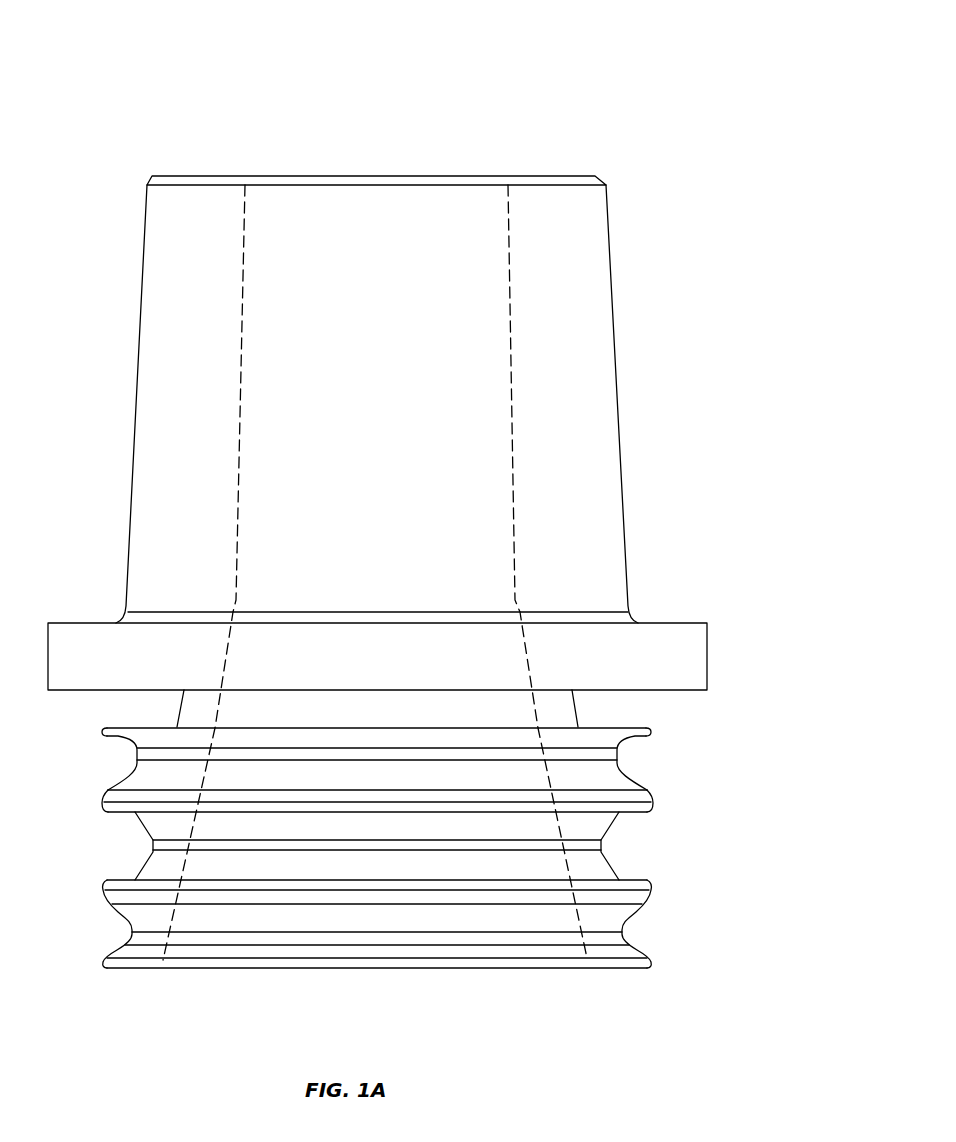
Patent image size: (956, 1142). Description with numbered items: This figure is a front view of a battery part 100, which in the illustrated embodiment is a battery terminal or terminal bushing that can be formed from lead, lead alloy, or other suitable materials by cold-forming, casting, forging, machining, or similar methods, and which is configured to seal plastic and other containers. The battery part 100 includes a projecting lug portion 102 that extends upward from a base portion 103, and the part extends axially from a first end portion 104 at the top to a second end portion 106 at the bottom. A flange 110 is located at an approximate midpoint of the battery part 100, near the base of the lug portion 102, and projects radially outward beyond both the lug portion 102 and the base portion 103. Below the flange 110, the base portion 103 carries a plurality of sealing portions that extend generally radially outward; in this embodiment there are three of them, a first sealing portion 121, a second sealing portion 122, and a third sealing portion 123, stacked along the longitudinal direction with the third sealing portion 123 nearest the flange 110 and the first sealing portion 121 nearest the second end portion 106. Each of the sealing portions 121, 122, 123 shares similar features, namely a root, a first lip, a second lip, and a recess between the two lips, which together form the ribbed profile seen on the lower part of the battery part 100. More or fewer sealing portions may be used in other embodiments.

The battery part 100 is at (672, 111).
The lug portion 102 is at (592, 250).
The first end portion 104 is at (534, 176).
The flange 110 is at (686, 655).
The base portion 103 is at (440, 876).
The third sealing portion 123 is at (128, 770).
The second sealing portion 122 is at (150, 824).
The first sealing portion 121 is at (132, 915).
The second end portion 106 is at (492, 968).